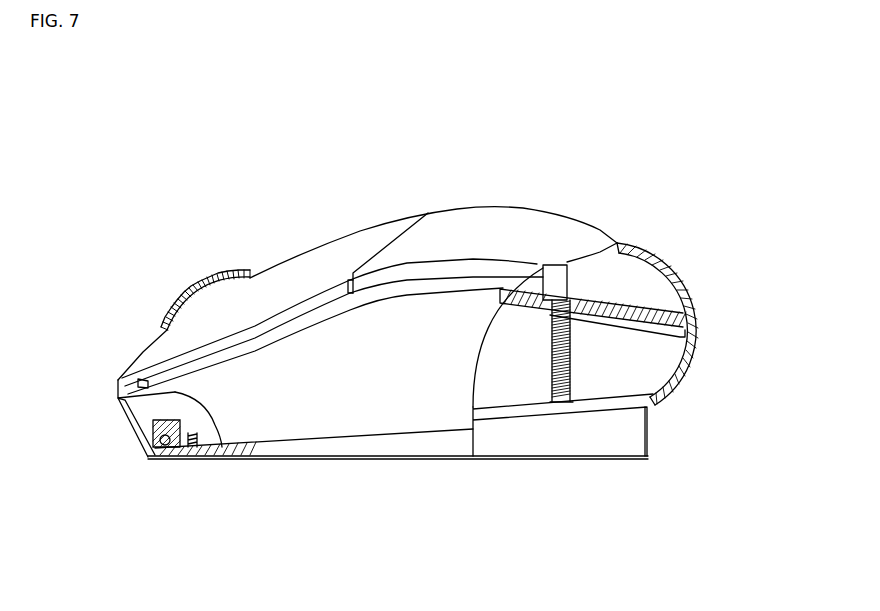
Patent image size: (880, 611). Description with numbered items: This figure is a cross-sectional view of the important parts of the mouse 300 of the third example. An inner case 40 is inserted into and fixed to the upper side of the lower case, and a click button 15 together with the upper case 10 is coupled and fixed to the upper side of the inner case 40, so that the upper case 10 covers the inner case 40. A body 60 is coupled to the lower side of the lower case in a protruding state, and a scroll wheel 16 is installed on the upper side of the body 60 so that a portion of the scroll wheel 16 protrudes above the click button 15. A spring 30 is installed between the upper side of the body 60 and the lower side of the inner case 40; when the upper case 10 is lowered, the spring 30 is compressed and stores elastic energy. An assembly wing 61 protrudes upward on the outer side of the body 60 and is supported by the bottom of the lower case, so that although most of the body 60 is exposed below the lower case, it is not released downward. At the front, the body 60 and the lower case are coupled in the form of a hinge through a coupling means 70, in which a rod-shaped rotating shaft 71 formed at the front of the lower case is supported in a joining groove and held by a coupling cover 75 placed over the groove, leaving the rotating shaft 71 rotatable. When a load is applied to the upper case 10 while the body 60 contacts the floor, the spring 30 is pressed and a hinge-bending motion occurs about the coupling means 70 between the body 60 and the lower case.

The mouse device 300 is at (494, 182).
The click button 15 is at (318, 270).
The scroll wheel 16 is at (183, 284).
The upper case 10 is at (623, 245).
The inner case 40 is at (640, 310).
The spring 30 is at (573, 345).
The body 60 is at (573, 437).
The assembly wing 61 is at (617, 413).
The coupling means 70 is at (160, 470).
The coupling cover 75 is at (150, 442).
The rotating shaft 71 is at (143, 450).